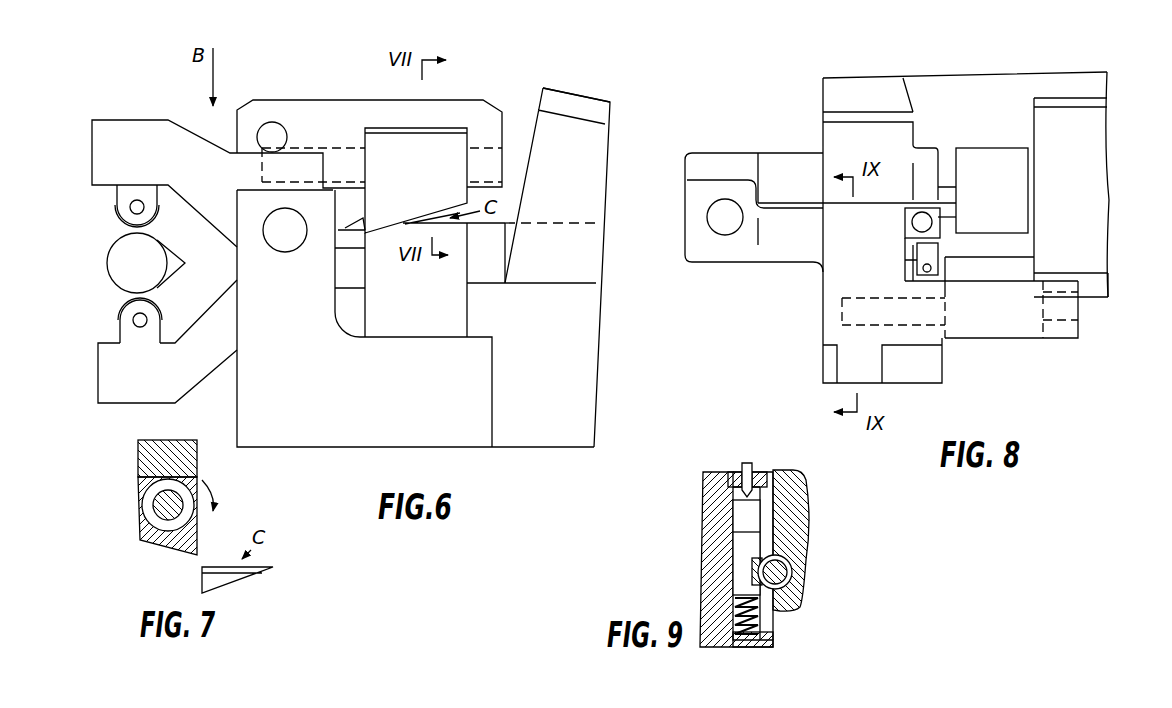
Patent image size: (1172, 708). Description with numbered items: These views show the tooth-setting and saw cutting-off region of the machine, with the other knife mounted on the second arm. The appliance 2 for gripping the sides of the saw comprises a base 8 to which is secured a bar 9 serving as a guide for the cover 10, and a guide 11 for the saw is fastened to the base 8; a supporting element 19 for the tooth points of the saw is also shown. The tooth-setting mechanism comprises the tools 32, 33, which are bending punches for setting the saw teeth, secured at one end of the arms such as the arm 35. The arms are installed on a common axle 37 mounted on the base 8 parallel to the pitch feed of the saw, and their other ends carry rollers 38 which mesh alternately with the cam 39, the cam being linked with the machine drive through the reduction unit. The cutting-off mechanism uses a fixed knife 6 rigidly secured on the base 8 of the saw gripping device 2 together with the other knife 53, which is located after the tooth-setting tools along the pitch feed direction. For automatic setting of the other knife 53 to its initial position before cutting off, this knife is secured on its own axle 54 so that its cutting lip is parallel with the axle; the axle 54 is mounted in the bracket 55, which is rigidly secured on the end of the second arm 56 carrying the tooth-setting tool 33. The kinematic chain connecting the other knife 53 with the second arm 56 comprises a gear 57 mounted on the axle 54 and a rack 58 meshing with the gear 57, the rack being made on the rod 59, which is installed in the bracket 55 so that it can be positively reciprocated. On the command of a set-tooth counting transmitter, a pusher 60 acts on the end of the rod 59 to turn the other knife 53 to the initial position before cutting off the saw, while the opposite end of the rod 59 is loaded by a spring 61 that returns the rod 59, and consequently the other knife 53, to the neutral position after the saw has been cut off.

In FIG. 6, the appliance for gripping the sides of the saw 2 is at (579, 91).
In FIG. 8, the appliance for gripping the sides of the saw 2 is at (1116, 182).
In FIG. 6, the fixed knife 6 is at (450, 318).
In FIG. 7, the fixed knife 6 is at (273, 575).
In FIG. 8, the fixed knife 6 is at (1017, 258).
In FIG. 6, the base 8 is at (265, 440).
In FIG. 8, the base 8 is at (1072, 82).
In FIG. 8, the bar 9 is at (1097, 260).
In FIG. 6, the cover 10 is at (535, 140).
In FIG. 8, the guide 11 is at (978, 158).
In FIG. 8, the supporting element 19 is at (912, 260).
In FIG. 6, the tooth-setting tool 32 is at (353, 249).
In FIG. 8, the tooth-setting tool 32 is at (947, 193).
In FIG. 6, the tooth-setting tool 33 is at (345, 223).
In FIG. 8, the tooth-setting tool 33 is at (947, 215).
In FIG. 6, the arm 35 is at (113, 395).
In FIG. 8, the arm 35 is at (700, 167).
In FIG. 6, the common axle 37 is at (277, 243).
In FIG. 6, the roller 38 is at (164, 223).
In FIG. 6, the cam 39 is at (118, 260).
In FIG. 6, the other knife 53 is at (442, 142).
In FIG. 7, the other knife 53 is at (188, 536).
In FIG. 6, the axle of the other knife 54 is at (350, 148).
In FIG. 7, the axle of the other knife 54 is at (150, 527).
In FIG. 8, the axle of the other knife 54 is at (1066, 329).
In FIG. 6, the bracket 55 is at (261, 110).
In FIG. 7, the bracket 55 is at (180, 440).
In FIG. 8, the bracket 55 is at (1003, 332).
In FIG. 9, the bracket 55 is at (717, 587).
In FIG. 6, the second arm 56 is at (90, 128).
In FIG. 8, the second arm 56 is at (700, 253).
In FIG. 9, the second arm 56 is at (800, 555).
In FIG. 9, the gear 57 is at (787, 577).
In FIG. 9, the rack 58 is at (764, 540).
In FIG. 9, the rod 59 is at (740, 558).
In FIG. 9, the pusher 60 is at (748, 473).
In FIG. 9, the spring 61 is at (757, 613).